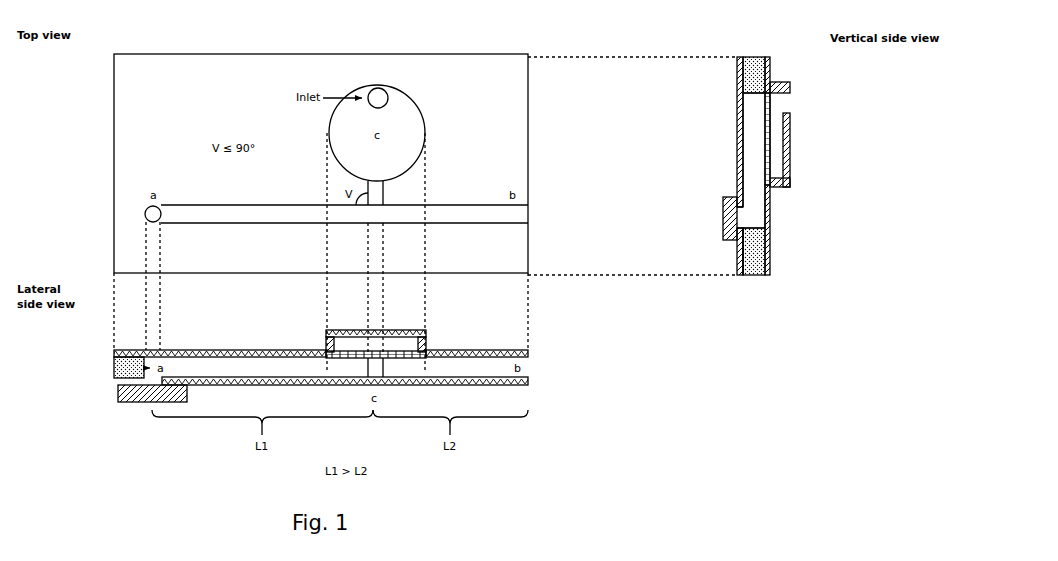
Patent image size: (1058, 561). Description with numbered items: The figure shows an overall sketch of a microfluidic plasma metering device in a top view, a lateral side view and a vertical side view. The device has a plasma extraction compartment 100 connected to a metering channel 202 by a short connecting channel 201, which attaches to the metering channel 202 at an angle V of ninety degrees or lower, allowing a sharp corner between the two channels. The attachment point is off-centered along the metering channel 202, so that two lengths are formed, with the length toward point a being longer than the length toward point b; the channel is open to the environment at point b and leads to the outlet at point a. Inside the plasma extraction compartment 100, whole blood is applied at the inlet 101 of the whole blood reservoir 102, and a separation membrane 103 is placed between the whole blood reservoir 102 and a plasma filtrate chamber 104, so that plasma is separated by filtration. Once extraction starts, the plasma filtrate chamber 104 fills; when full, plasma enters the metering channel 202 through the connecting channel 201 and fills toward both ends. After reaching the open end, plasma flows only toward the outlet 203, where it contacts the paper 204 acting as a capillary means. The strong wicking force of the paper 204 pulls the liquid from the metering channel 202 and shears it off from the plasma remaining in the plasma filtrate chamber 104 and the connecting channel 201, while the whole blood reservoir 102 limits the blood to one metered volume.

The plasma extraction compartment 100 is at (405, 133).
The inlet 101 is at (797, 97).
The whole blood reservoir 102 is at (392, 343).
The separation membrane 103 is at (778, 148).
The plasma filtrate chamber 104 is at (757, 168).
The connecting channel 201 is at (383, 197).
The metering channel 202 is at (478, 370).
The outlet 203 is at (752, 218).
The paper 204 is at (116, 392).